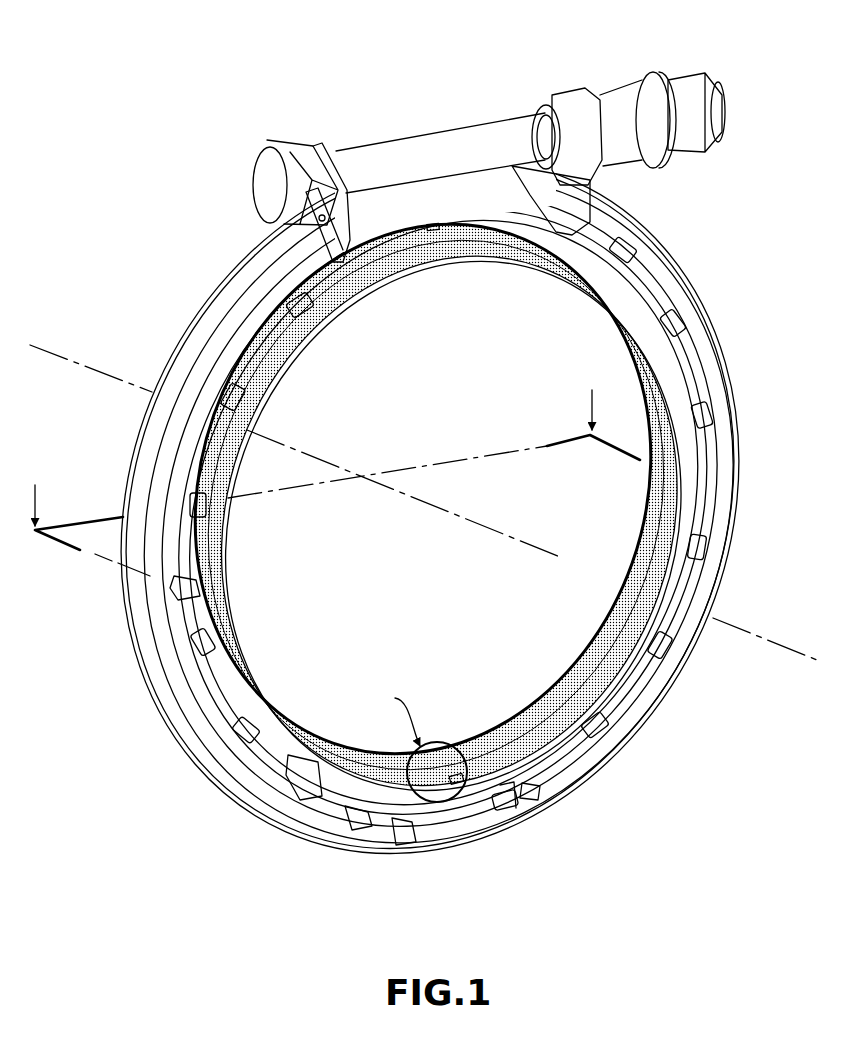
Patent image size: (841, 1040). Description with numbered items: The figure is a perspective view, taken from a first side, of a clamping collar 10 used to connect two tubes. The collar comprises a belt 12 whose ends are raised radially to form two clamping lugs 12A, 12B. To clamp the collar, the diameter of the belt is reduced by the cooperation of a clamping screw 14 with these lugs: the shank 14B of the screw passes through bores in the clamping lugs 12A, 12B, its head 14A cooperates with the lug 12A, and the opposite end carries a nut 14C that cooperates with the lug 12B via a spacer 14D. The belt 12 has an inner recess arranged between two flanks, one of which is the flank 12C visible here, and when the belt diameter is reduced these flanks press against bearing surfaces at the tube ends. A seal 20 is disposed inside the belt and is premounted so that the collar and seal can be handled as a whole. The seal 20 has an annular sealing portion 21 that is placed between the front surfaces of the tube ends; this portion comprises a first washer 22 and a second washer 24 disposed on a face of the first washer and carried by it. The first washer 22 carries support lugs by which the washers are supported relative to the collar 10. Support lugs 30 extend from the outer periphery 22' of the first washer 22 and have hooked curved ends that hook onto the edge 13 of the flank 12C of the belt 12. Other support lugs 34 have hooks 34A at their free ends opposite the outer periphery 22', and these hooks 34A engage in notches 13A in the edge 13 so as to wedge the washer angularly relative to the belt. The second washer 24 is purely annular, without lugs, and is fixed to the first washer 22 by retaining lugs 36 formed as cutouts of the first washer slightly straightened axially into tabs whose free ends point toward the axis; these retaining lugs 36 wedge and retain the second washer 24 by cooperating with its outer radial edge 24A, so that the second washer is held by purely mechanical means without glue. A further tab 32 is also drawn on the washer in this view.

The clamping collar 10 is at (426, 486).
The belt 12 is at (426, 506).
The clamping lug 12A is at (285, 140).
The clamping lug 12B is at (558, 97).
The flank 12C is at (702, 337).
The edge 13 is at (707, 360).
The notches 13A is at (428, 822).
The clamping screw 14 is at (464, 140).
The head 14A is at (253, 180).
The shank 14B is at (433, 143).
The nut 14C is at (700, 97).
The spacer 14D is at (617, 100).
The seal 20 is at (438, 483).
The annular sealing portion 21 is at (405, 292).
The first washer 22 is at (438, 483).
The outer periphery 22' is at (460, 203).
The second washer 24 is at (447, 258).
The outer radial edge 24A is at (558, 275).
The support lugs 30 is at (622, 245).
The retaining tab 32 is at (720, 545).
The support lugs 34 is at (536, 844).
The hooks 34A is at (516, 808).
The retaining lugs 36 is at (440, 786).